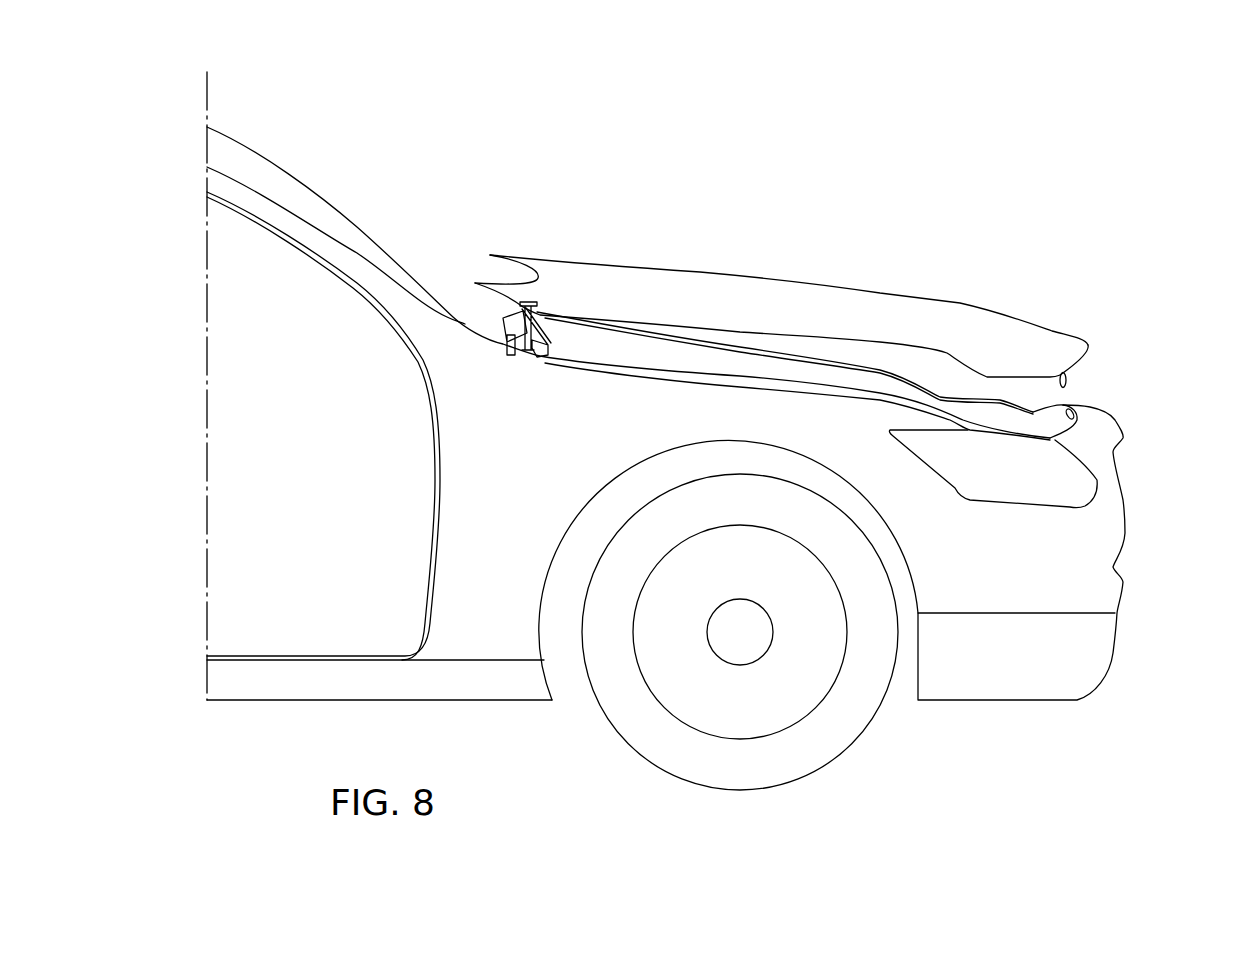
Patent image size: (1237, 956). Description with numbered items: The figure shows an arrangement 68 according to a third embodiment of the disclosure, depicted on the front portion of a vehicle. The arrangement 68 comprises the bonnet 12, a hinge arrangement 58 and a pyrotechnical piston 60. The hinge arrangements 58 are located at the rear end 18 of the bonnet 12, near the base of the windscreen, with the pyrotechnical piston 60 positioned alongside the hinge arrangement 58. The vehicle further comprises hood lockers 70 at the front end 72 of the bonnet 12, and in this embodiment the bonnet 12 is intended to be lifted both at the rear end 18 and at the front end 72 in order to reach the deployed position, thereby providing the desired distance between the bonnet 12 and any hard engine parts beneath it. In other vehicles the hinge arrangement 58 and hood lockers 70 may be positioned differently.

The bonnet 12 is at (805, 307).
The rear end 18 is at (498, 272).
The hinge arrangement 58 is at (562, 350).
The pyrotechnical piston 60 is at (527, 340).
The arrangement 68 is at (632, 236).
The hood lockers 70 is at (1067, 380).
The front end 72 is at (1112, 361).